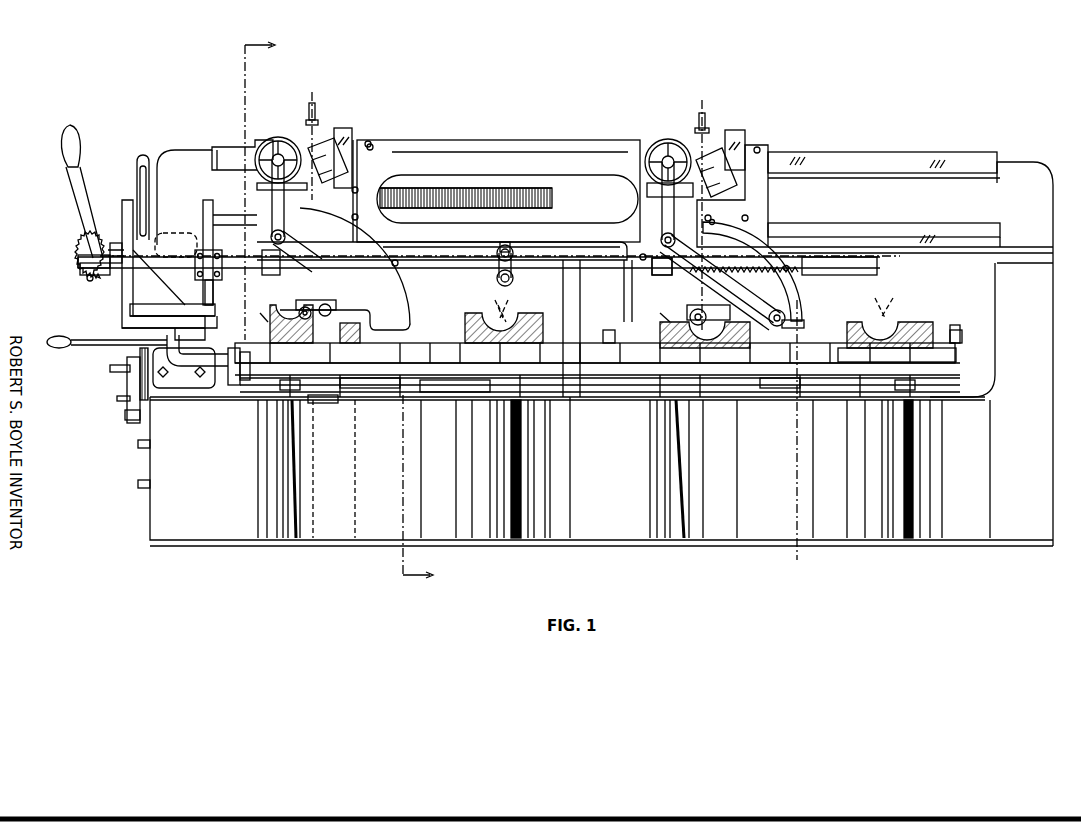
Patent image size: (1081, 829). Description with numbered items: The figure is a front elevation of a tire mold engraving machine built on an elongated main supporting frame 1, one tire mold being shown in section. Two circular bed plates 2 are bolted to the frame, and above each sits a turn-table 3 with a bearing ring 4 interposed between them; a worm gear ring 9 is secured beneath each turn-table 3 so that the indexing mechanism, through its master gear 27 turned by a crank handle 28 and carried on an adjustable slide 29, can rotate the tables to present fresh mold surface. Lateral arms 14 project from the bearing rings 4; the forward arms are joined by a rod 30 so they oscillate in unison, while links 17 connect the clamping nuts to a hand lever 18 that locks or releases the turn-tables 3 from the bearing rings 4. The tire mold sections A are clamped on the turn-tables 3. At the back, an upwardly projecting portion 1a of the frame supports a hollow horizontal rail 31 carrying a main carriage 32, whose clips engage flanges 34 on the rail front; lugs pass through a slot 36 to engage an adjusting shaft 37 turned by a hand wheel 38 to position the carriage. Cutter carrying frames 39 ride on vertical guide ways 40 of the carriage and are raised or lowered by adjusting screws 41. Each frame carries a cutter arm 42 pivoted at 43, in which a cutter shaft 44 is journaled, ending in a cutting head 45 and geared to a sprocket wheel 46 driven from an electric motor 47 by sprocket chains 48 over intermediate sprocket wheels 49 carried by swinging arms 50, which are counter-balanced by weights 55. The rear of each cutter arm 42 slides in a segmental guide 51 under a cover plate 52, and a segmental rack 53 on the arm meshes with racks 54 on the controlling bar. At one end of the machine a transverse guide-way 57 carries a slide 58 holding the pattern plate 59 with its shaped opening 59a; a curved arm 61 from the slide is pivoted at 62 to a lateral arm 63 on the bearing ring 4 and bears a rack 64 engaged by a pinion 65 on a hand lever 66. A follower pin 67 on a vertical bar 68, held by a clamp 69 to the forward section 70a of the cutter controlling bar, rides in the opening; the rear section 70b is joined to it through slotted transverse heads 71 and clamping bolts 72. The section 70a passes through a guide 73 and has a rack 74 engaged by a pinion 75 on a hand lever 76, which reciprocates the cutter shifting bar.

The main supporting frame 1 is at (338, 540).
The upwardly projecting portion 1a is at (1040, 307).
The circular bed plate 2 is at (595, 393).
The turn-table 3 is at (950, 376).
The bearing ring 4 is at (680, 392).
The worm gear ring 9 is at (953, 392).
The lateral arm 14 is at (400, 390).
The link 17 is at (577, 398).
The hand lever 18 is at (313, 403).
The master gear 27 is at (140, 365).
The crank handle 28 is at (128, 385).
The slide 29 is at (133, 417).
The rod 30 is at (588, 385).
The hollow horizontal rail 31 is at (196, 160).
The main carriage 32 is at (380, 152).
The flange 34 is at (897, 162).
The slot 36 is at (462, 187).
The adjusting shaft 37 is at (427, 190).
The hand wheel 38 is at (142, 165).
The cutter carrying frame 39 is at (352, 208).
The vertical guide way 40 is at (350, 135).
The vertical adjusting screw 41 is at (323, 140).
The cutter arm 42 is at (787, 312).
The pivot 43 is at (692, 311).
The cutter shaft 44 is at (282, 294).
The cutting head 45 is at (598, 333).
The sprocket wheel 46 is at (804, 320).
The electric motor 47 is at (273, 138).
The sprocket chain 48 is at (270, 189).
The intermediate sprocket wheel 49 is at (300, 228).
The swinging arm 50 is at (272, 213).
The segmental guide 51 is at (796, 285).
The cover plate 52 is at (398, 297).
The segmental rack 53 is at (675, 283).
The rack 54 is at (775, 262).
The weight 55 is at (375, 146).
The guide-way 57 is at (122, 324).
The slide 58 is at (128, 312).
The pattern plate 59 is at (130, 308).
The opening 59a is at (188, 305).
The curved arm 61 is at (213, 380).
The pivotal connection 62 is at (235, 386).
The lateral arm 63 is at (245, 381).
The rack 64 is at (174, 370).
The pinion 65 is at (147, 375).
The hand lever 66 is at (100, 340).
The follower pin 67 is at (212, 298).
The vertical bar 68 is at (203, 210).
The clamp 69 is at (176, 235).
The forward section of cutter controlling bar 70a is at (78, 262).
The rear section of cutter controlling bar 70b is at (508, 300).
The transverse head 71 is at (512, 262).
The clamping bolt 72 is at (497, 254).
The guide 73 is at (115, 242).
The rack 74 is at (80, 266).
The pinion 75 is at (80, 284).
The hand lever 76 is at (78, 205).
The tire mold section A is at (460, 307).